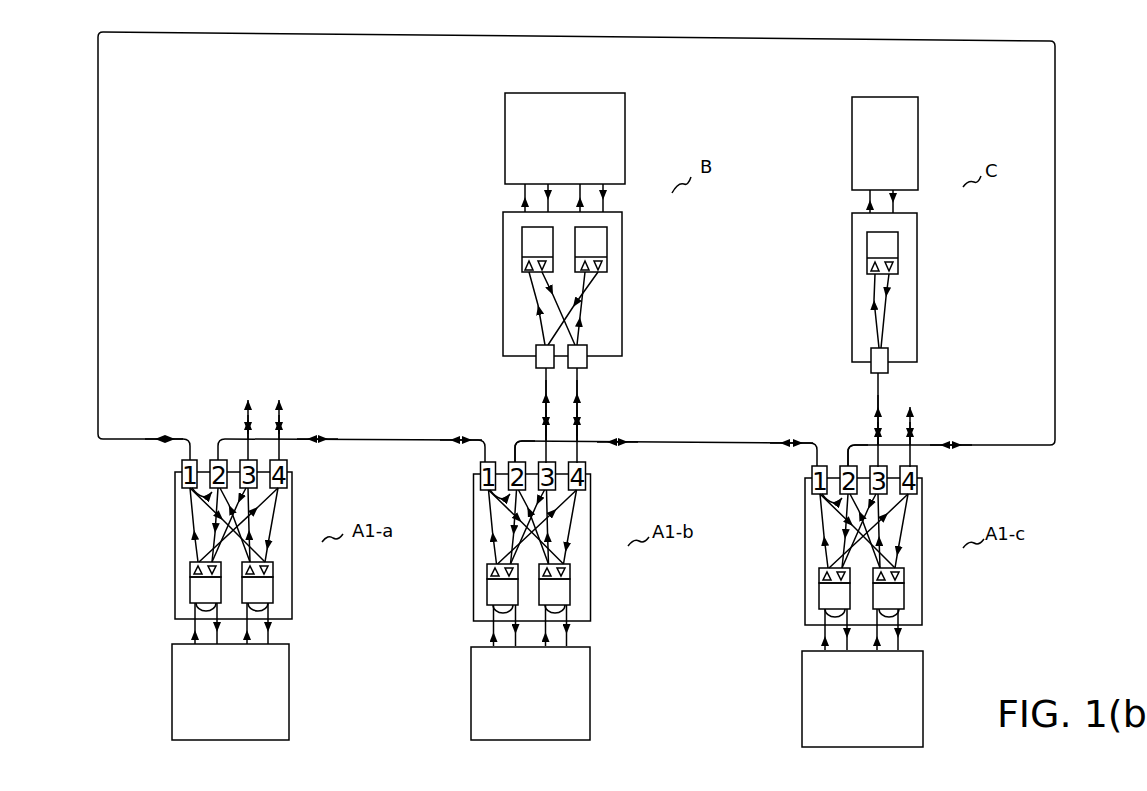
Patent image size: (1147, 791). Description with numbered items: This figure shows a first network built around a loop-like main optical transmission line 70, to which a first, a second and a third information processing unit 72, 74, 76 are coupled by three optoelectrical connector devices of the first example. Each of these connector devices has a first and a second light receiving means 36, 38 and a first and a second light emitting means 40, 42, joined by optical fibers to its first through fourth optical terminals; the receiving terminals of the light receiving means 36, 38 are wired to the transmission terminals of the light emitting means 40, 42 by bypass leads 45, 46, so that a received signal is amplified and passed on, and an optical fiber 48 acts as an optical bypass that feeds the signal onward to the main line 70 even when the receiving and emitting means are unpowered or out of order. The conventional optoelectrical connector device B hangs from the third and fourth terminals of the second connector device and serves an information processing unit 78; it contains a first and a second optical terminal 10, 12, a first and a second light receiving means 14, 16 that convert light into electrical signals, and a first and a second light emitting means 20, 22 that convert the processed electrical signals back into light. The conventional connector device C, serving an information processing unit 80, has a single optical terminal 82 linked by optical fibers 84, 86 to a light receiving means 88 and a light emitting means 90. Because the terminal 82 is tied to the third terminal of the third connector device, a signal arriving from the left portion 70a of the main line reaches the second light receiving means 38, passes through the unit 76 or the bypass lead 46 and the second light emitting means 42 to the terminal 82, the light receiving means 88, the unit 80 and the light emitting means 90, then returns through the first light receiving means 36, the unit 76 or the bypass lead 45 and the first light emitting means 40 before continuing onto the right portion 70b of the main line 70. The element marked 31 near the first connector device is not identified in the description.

The main optical transmission line 70 is at (98, 145).
The left portion of main optical transmission line 70a is at (486, 438).
The right portion of main optical transmission line 70b is at (516, 438).
The first information processing unit 72 is at (289, 700).
The second information processing unit 74 is at (590, 707).
The third information processing unit 76 is at (923, 712).
The information processing unit 78 is at (625, 126).
The information processing unit 80 is at (918, 128).
The transmission line ends 31 is at (251, 412).
The optical fiber 48 is at (499, 503).
The first light emitting means 40 is at (489, 571).
The first light receiving means 36 is at (500, 590).
The second light receiving means 38 is at (571, 575).
The second light emitting means 42 is at (568, 596).
The bypass lead 45 is at (830, 626).
The bypass lead 46 is at (566, 620).
The first light receiving means 14 is at (527, 264).
The second light emitting means 22 is at (604, 263).
The first light emitting means 20 is at (536, 275).
The second light receiving means 16 is at (590, 276).
The first optical terminal 10 is at (536, 360).
The second optical terminal 12 is at (587, 368).
The light receiving means 88 is at (867, 268).
The light emitting means 90 is at (899, 268).
The optical fiber 84 is at (878, 312).
The optical fiber 86 is at (883, 312).
The optical terminal 82 is at (888, 370).